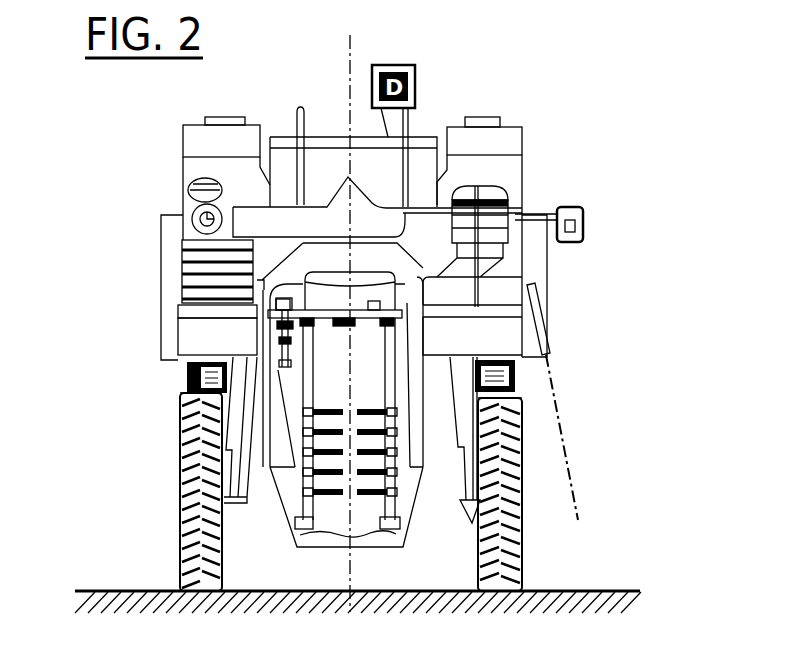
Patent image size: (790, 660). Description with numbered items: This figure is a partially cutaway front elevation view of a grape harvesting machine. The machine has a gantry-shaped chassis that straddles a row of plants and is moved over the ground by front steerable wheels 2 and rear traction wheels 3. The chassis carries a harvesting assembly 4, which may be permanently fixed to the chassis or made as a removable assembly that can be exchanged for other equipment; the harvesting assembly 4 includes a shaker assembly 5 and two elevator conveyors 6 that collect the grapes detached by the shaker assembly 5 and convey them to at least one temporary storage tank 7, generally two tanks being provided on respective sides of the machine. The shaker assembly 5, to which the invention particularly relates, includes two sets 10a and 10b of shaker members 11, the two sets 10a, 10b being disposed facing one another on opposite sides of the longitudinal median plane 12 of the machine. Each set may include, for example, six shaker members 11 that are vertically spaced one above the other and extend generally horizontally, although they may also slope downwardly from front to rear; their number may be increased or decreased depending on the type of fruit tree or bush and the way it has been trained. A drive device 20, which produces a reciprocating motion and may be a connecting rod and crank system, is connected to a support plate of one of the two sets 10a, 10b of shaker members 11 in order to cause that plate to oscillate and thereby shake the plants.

The front steerable wheels 2 is at (180, 557).
The rear traction wheels 3 is at (181, 432).
The harvesting assembly 4 is at (270, 489).
The shaker assembly 5 is at (372, 361).
The elevator conveyors 6 is at (392, 553).
The temporary storage tank 7 is at (160, 275).
The set of shaker members 10a is at (294, 520).
The set of shaker members 10b is at (398, 515).
The shaker members 11 is at (372, 417).
The longitudinal median plane 12 is at (350, 62).
The drive device 20 is at (274, 339).